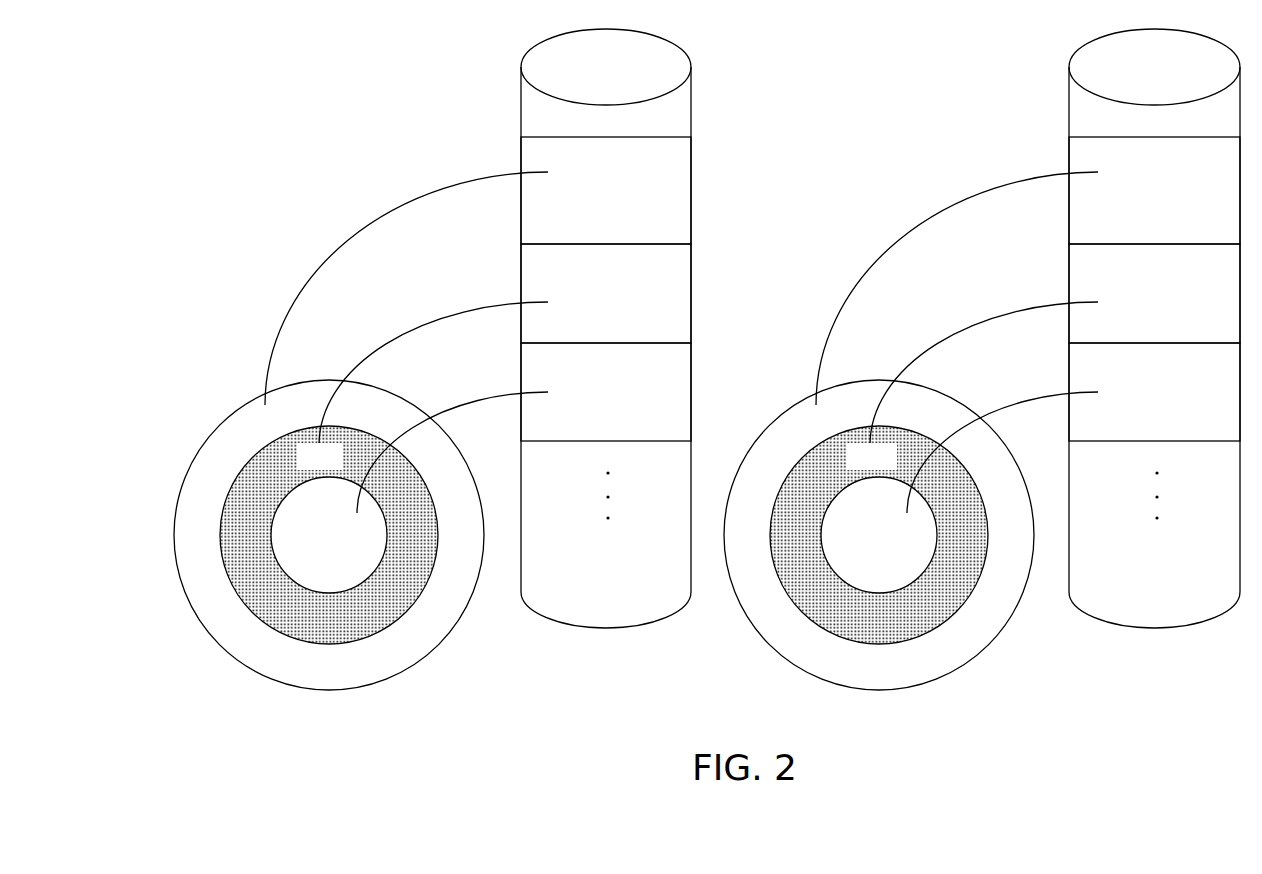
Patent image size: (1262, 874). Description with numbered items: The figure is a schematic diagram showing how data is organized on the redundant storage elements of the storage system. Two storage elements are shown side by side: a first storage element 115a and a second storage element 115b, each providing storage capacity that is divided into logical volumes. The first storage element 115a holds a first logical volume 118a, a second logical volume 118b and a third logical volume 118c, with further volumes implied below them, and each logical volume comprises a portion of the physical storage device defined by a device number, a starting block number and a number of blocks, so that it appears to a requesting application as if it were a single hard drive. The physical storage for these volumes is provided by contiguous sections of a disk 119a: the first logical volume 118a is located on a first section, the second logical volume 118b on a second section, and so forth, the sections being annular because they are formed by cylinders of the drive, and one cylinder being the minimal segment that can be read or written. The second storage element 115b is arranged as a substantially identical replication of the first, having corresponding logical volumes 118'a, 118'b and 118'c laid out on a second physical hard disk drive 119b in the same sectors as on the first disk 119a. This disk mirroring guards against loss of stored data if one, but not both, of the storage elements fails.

The first storage element 115a is at (593, 92).
The second storage element 115b is at (1178, 92).
The first logical volume 118a is at (590, 218).
The second logical volume 118b is at (633, 326).
The third logical volume 118c is at (633, 424).
The first logical volume of second storage element 118'a is at (1154, 190).
The second logical volume of second storage element 118'b is at (1154, 293).
The third logical volume of second storage element 118'c is at (1154, 392).
The disk 119a is at (360, 750).
The physical hard disk drive 119b is at (1040, 750).